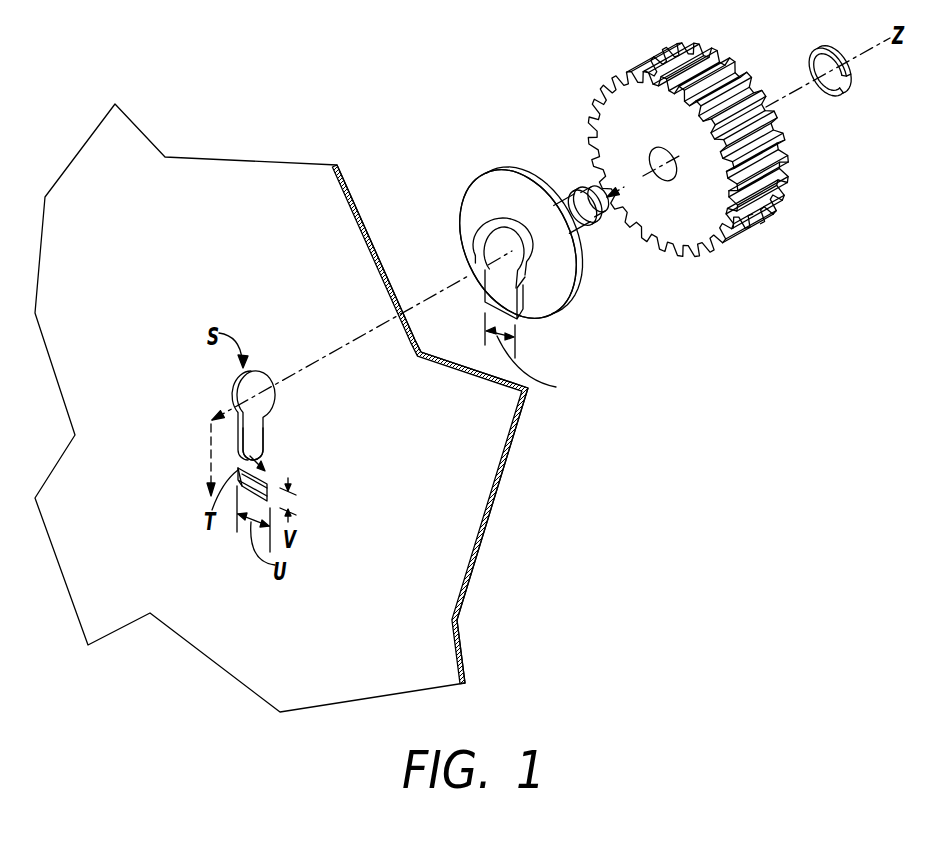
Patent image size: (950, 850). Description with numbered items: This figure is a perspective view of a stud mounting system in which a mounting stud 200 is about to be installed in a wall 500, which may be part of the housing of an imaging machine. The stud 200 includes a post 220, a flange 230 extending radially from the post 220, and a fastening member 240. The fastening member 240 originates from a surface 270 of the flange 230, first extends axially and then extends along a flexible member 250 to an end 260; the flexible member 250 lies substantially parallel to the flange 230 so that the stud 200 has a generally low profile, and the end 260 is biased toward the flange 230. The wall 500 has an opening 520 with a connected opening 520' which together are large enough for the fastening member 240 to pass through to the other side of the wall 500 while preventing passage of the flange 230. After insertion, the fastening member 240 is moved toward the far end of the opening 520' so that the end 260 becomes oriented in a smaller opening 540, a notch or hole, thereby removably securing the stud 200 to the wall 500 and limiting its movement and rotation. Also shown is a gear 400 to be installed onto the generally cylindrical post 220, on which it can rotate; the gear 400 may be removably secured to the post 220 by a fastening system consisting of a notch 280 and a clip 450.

The mounting stud 200 is at (481, 148).
The post 220 is at (565, 196).
The flange 230 is at (578, 258).
The fastening member 240 is at (495, 275).
The flexible member 250 is at (521, 319).
The end 260 is at (528, 304).
The surface 270 is at (555, 272).
The notch 280 is at (598, 216).
The gear 400 is at (690, 45).
The clip 450 is at (825, 46).
The wall 500 is at (310, 160).
The opening 520 is at (282, 415).
The connected opening 520' is at (290, 443).
The opening 540 is at (266, 483).